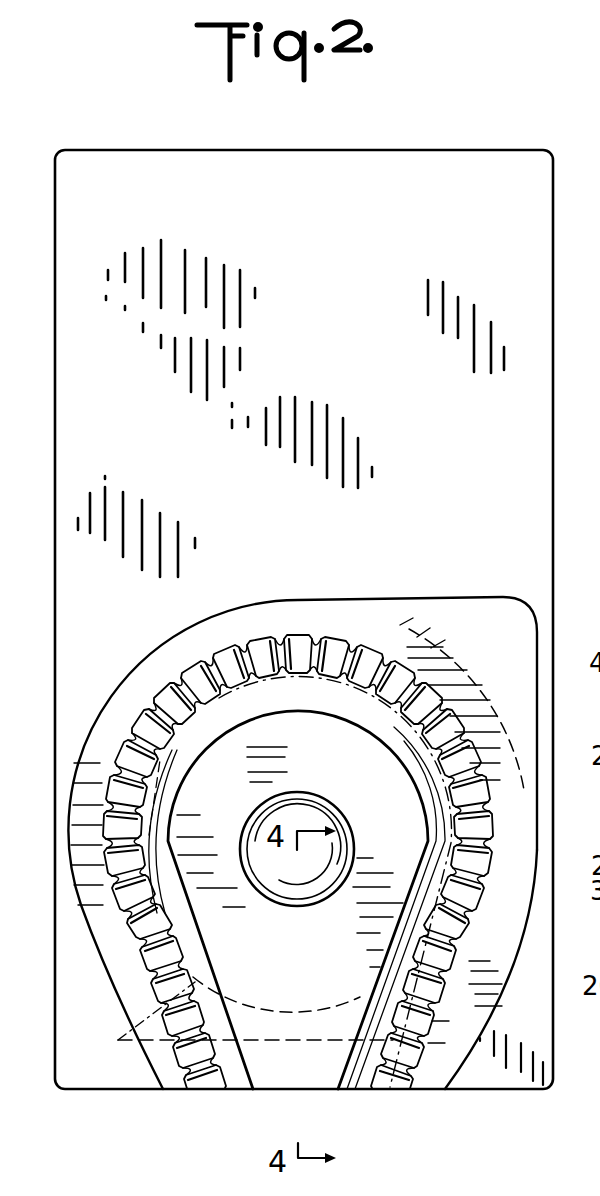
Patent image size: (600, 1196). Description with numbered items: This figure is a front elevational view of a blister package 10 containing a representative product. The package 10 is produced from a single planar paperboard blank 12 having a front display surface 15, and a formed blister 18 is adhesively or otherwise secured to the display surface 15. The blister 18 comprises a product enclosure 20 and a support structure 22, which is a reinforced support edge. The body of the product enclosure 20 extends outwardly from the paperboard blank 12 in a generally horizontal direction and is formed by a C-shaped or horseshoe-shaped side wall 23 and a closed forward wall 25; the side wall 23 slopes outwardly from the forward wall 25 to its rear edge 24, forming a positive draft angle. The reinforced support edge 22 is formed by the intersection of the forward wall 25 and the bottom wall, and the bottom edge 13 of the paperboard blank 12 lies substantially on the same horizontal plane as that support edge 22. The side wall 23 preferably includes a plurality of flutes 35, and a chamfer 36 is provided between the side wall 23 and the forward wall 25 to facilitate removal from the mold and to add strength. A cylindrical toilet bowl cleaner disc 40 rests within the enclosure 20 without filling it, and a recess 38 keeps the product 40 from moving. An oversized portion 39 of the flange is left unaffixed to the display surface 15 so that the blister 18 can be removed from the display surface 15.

The blister package 10 is at (313, 581).
The paperboard blank 12 is at (453, 170).
The bottom edge 13 is at (440, 1093).
The front display surface 15 is at (336, 348).
The blister 18 is at (282, 992).
The product enclosure 20 is at (253, 1090).
The support structure 22 is at (313, 1090).
The C-shaped side wall 23 is at (190, 682).
The rear edge 24 is at (137, 733).
The forward wall 25 is at (322, 770).
The flutes 35 is at (294, 633).
The chamfer 36 is at (180, 760).
The recess 38 is at (272, 893).
The oversized portion 39 is at (468, 597).
The toilet bowl cleaner disc 40 is at (118, 1040).